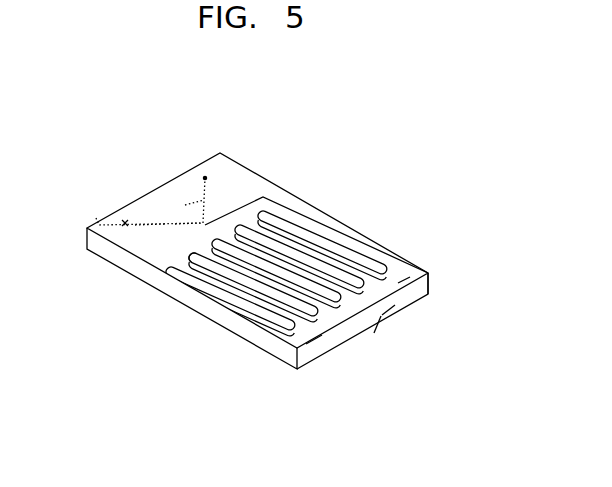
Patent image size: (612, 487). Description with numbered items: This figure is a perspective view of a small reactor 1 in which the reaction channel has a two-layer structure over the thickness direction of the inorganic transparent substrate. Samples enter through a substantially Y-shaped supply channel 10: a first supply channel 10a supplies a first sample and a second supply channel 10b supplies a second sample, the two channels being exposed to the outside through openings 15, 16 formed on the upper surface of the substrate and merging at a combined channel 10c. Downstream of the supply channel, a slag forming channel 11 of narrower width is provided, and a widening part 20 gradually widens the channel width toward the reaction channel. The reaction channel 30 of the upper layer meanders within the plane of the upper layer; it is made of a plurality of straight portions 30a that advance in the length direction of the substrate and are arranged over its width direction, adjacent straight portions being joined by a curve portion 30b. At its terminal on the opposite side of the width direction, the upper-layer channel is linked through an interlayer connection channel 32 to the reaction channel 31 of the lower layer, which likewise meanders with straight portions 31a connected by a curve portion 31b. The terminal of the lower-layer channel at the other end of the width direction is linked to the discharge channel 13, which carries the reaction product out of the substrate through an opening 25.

The heat dissipation device 1 is at (70, 93).
The supply channel 10 is at (142, 138).
The first supply channel 10a is at (202, 197).
The second supply channel 10b is at (157, 222).
The combined channel 10c is at (198, 223).
The slag forming channel 11 is at (293, 210).
The discharge channel 13 is at (382, 315).
The opening 15 is at (204, 176).
The opening 16 is at (105, 224).
The widening part 20 is at (430, 292).
The opening 25 is at (375, 332).
The reaction channel of upper layer 30 is at (355, 262).
The straight portions 30a is at (308, 248).
The curve portion 30b is at (404, 277).
The reaction channel of lower layer 31 is at (250, 308).
The straight portions 31a is at (220, 290).
The curve portion 31b is at (183, 264).
The interlayer connection channel 32 is at (314, 342).